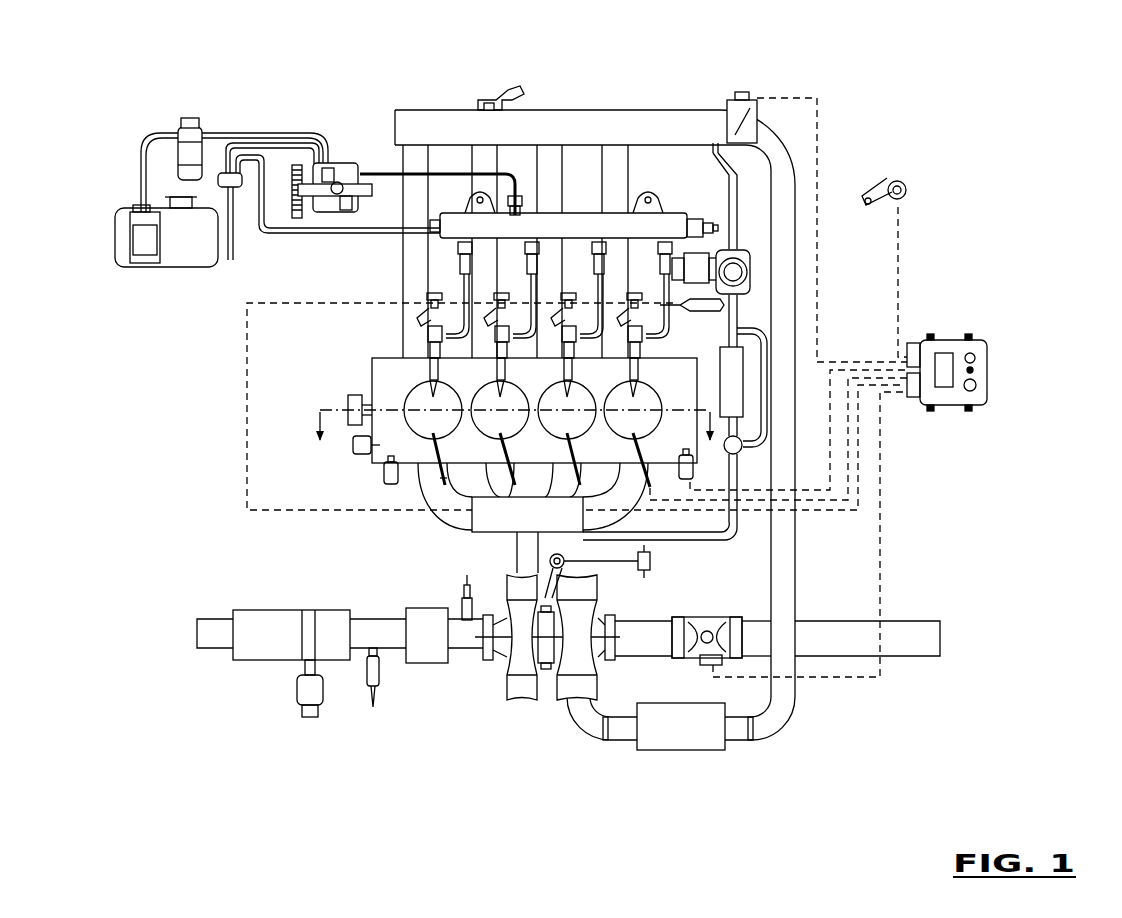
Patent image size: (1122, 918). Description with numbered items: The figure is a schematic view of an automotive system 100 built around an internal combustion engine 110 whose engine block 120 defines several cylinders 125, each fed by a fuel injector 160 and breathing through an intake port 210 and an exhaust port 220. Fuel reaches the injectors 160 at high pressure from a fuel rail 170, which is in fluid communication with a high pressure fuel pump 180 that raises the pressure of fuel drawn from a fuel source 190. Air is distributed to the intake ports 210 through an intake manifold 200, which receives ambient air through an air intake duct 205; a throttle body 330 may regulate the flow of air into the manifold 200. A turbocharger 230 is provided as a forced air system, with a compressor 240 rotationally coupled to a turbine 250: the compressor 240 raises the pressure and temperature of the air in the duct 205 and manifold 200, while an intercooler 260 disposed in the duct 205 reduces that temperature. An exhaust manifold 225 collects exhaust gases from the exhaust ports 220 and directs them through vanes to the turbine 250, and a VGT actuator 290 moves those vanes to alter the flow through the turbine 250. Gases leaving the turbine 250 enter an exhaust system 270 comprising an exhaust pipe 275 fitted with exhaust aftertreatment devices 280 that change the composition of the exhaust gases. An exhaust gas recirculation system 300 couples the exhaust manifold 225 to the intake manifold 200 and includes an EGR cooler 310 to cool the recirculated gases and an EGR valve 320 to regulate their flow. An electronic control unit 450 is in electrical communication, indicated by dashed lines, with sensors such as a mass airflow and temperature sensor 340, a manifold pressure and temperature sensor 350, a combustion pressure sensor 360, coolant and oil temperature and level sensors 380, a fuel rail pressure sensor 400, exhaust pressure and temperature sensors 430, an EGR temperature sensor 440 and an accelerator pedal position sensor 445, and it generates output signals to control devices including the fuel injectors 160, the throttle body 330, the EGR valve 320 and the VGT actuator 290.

The automotive system 100 is at (308, 90).
The internal combustion engine 110 is at (642, 100).
The engine block 120 is at (372, 368).
The cylinder 125 is at (655, 387).
The fuel injector 160 is at (433, 338).
The fuel rail 170 is at (433, 228).
The high pressure fuel pump 180 is at (340, 163).
The fuel source 190 is at (192, 250).
The intake manifold 200 is at (553, 130).
The air intake duct 205 is at (910, 640).
The intake port 210 is at (420, 358).
The exhaust port 220 is at (423, 475).
The exhaust manifold 225 is at (503, 523).
The turbocharger 230 is at (518, 712).
The compressor 240 is at (578, 670).
The turbine 250 is at (522, 663).
The intercooler 260 is at (705, 733).
The exhaust system 270 is at (275, 597).
The exhaust pipe 275 is at (212, 637).
The exhaust aftertreatment device 280 is at (258, 638).
The VGT actuator 290 is at (572, 563).
The exhaust gas recirculation system 300 is at (702, 552).
The EGR cooler 310 is at (735, 397).
The EGR valve 320 is at (737, 248).
The throttle body 330 is at (742, 100).
The mass airflow and temperature sensor 340 is at (703, 658).
The manifold pressure and temperature sensor 350 is at (493, 93).
The combustion pressure sensor 360 is at (446, 480).
The coolant and oil temperature and level sensors 380 is at (385, 472).
The fuel rail pressure sensor 400 is at (716, 224).
The exhaust pressure and temperature sensors 430 is at (373, 707).
The EGR temperature sensor 440 is at (745, 293).
The accelerator pedal position sensor 445 is at (900, 172).
The electronic control unit 450 is at (952, 338).